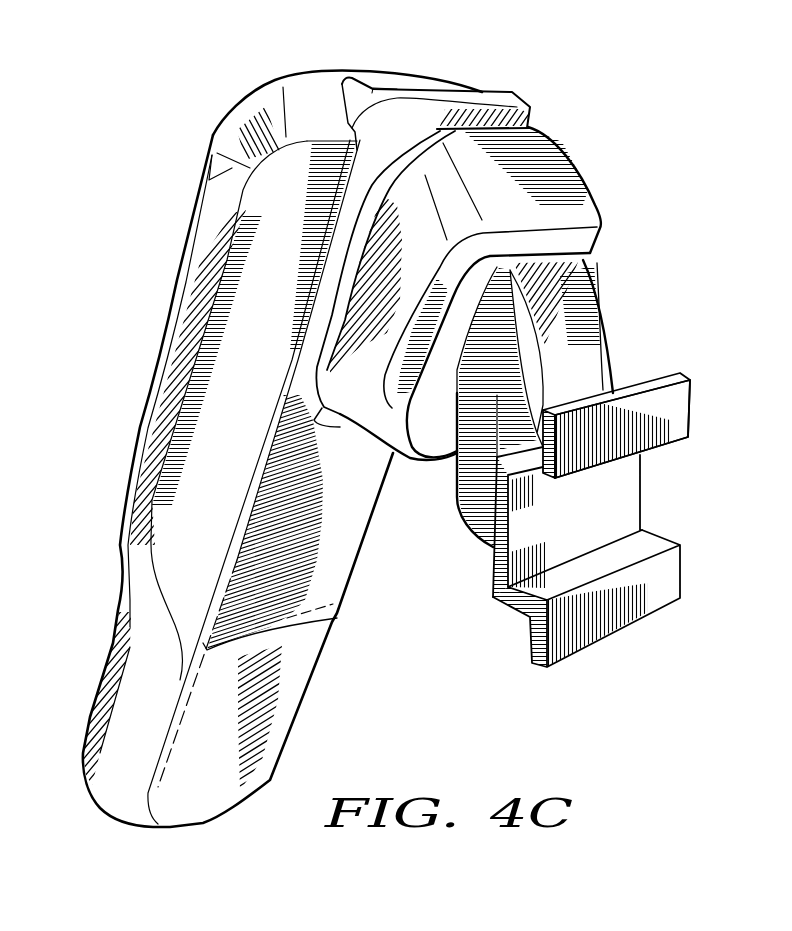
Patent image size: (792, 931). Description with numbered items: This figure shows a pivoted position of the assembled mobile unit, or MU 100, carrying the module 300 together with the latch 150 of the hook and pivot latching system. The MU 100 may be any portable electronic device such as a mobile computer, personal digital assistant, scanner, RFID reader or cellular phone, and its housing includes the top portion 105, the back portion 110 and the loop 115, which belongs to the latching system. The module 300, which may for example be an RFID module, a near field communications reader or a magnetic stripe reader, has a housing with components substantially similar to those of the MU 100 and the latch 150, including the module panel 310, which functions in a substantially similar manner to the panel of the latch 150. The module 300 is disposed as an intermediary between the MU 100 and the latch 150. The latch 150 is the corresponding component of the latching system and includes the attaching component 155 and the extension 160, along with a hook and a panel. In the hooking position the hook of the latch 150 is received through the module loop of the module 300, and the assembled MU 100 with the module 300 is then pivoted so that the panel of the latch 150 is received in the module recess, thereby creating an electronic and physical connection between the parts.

The MU 100 is at (155, 209).
The top portion 105 is at (300, 108).
The back portion 110 is at (277, 713).
The loop 115 is at (483, 98).
The latch 150 is at (630, 367).
The attaching component 155 is at (645, 500).
The extension 160 is at (477, 503).
The module 300 is at (583, 163).
The module panel 310 is at (570, 235).